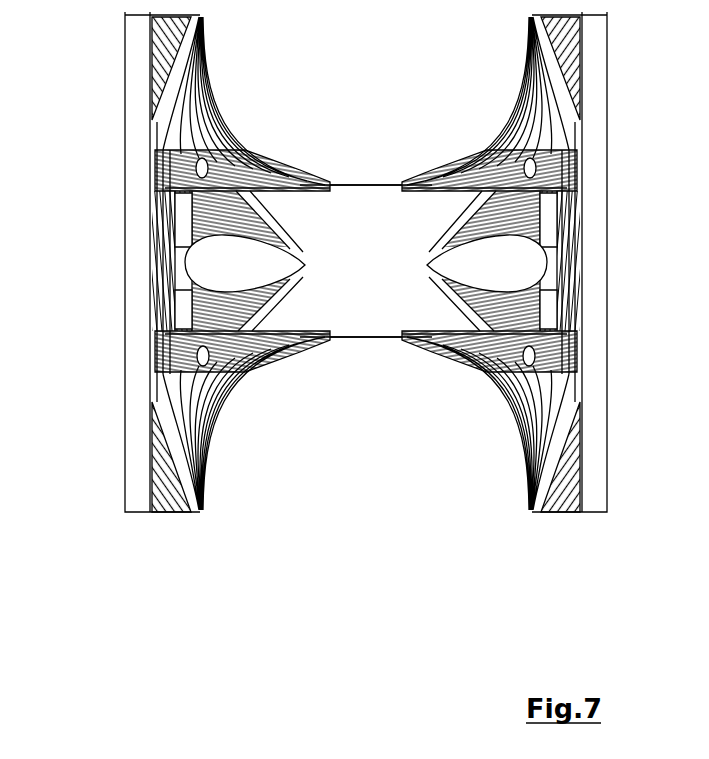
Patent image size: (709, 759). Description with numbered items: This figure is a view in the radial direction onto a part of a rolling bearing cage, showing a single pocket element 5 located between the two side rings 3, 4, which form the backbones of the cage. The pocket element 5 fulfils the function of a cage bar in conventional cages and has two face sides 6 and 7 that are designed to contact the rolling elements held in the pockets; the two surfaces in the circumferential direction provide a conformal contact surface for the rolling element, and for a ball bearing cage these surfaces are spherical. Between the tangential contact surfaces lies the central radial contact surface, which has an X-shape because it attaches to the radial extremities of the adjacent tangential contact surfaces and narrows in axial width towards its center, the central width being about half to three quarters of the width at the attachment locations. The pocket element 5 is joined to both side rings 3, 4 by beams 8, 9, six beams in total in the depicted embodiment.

The side ring 3 is at (137, 220).
The side ring 4 is at (597, 195).
The pocket element 5 is at (358, 238).
The face side 6 is at (367, 338).
The face side 7 is at (383, 187).
The beam 8 is at (218, 126).
The beam 9 is at (200, 320).